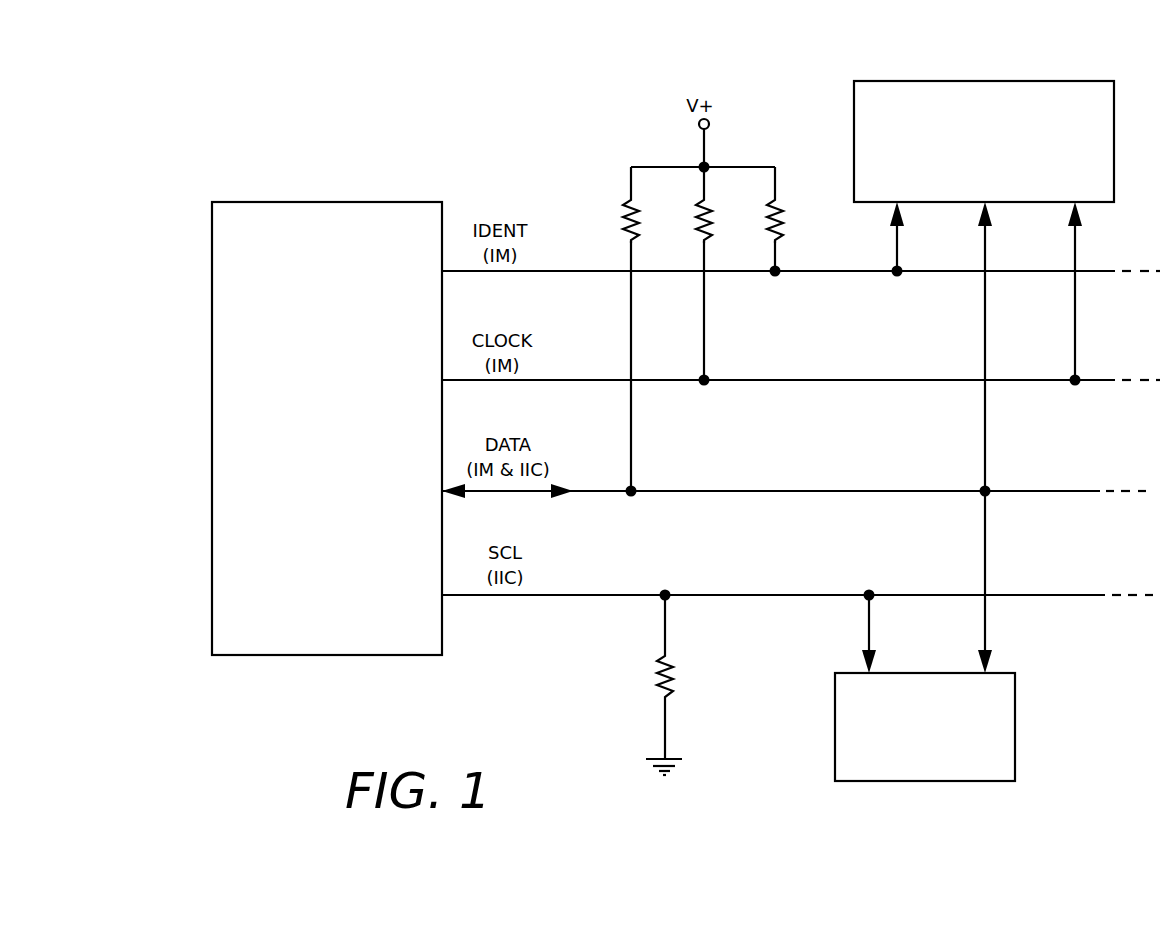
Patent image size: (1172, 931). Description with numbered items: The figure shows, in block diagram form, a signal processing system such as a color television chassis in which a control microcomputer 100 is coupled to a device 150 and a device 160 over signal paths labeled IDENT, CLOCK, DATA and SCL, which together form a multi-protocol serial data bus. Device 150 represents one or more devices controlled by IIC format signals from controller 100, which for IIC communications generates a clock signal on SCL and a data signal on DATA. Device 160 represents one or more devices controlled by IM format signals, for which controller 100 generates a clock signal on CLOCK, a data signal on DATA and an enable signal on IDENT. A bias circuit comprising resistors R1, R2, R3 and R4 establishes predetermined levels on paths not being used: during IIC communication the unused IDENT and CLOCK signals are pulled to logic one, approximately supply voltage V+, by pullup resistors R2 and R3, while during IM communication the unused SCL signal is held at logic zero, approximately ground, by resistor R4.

The control microcomputer 100 is at (327, 414).
The device 150 is at (946, 637).
The device 160 is at (984, 271).
The resistor R1 is at (615, 211).
The bias resistor R2 is at (689, 211).
The bias resistor R3 is at (760, 211).
The resistor R4 is at (677, 685).